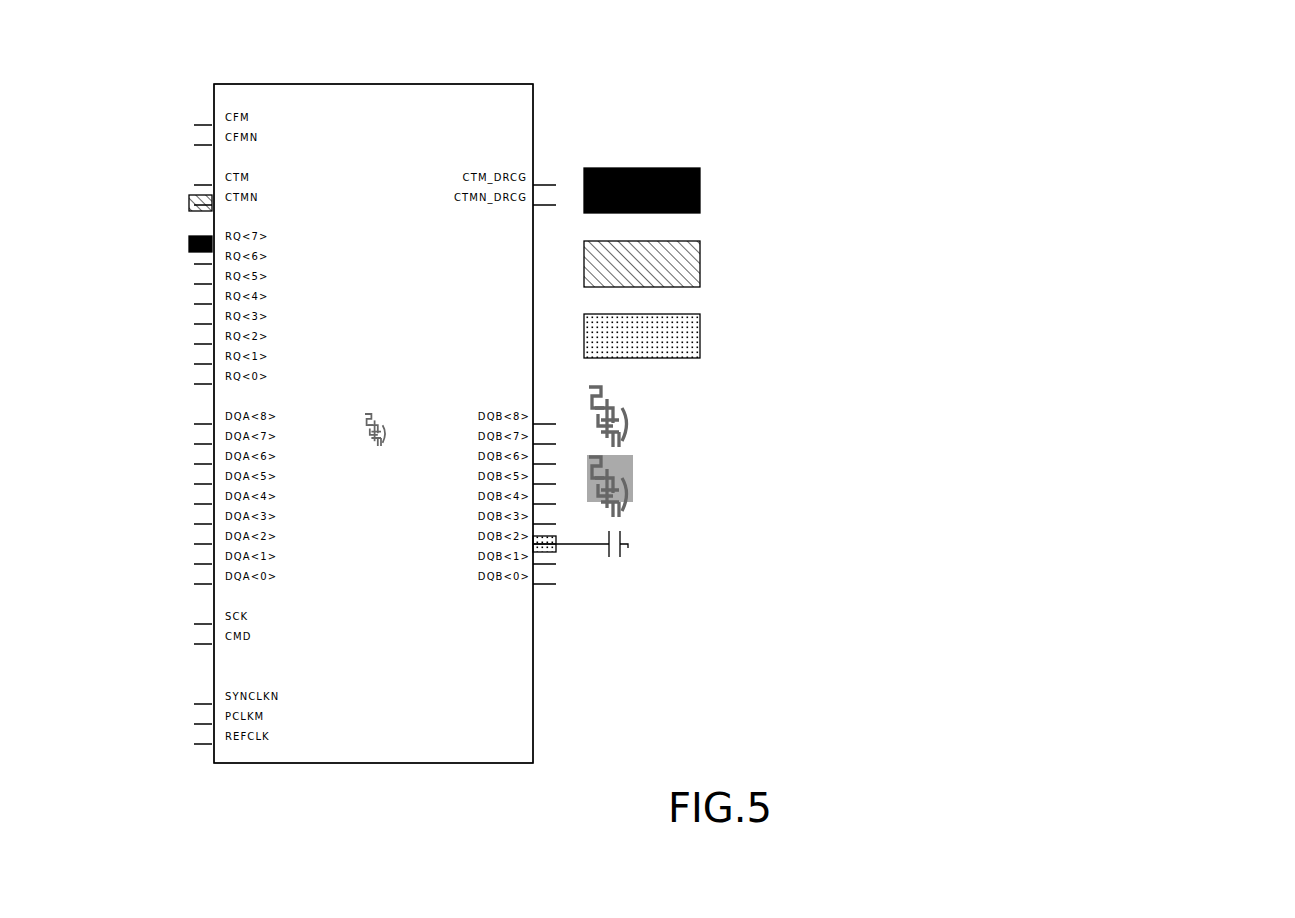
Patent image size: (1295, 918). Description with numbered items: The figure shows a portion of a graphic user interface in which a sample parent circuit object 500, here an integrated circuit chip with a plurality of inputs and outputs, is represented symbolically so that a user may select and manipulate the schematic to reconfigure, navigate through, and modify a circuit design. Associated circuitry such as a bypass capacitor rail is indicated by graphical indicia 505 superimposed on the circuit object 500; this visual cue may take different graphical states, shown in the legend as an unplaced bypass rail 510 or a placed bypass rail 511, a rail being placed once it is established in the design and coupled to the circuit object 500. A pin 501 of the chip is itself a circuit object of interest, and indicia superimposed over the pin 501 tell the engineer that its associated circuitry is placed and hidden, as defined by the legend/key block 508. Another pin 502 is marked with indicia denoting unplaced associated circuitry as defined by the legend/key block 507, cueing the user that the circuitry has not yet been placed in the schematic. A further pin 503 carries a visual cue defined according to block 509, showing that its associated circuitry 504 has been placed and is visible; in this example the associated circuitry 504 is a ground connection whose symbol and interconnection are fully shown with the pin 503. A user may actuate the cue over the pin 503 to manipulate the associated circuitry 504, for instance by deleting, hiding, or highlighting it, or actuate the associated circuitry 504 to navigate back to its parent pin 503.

The parent circuit object 500 is at (540, 121).
The pin 501 is at (188, 197).
The pin 502 is at (190, 243).
The pin 503 is at (556, 553).
The associated circuitry 504 is at (629, 546).
The graphical indicia 505 is at (373, 412).
The legend/key block 507 is at (1040, 192).
The legend/key block 508 is at (1145, 265).
The legend/key block 509 is at (1137, 337).
The unplaced bypass rail 510 is at (972, 410).
The placed bypass rail 511 is at (940, 478).